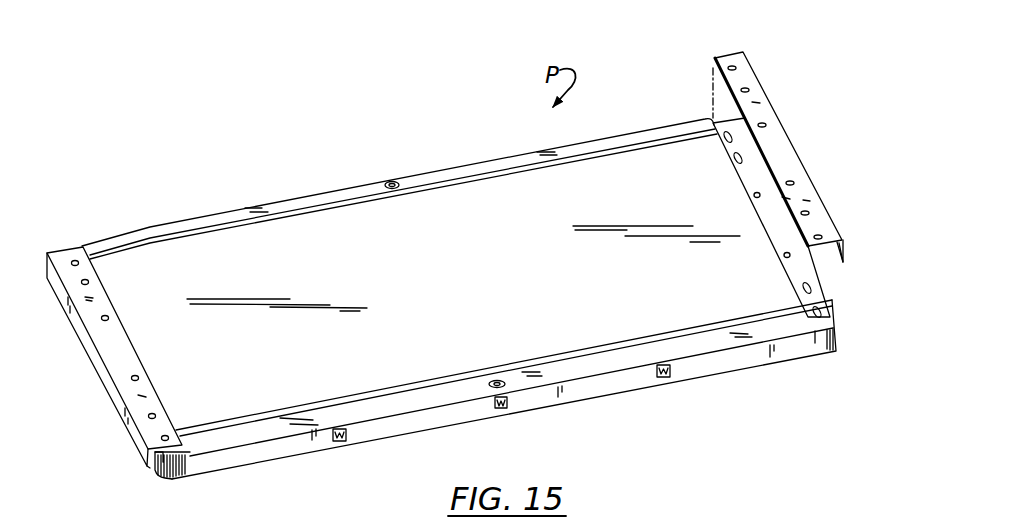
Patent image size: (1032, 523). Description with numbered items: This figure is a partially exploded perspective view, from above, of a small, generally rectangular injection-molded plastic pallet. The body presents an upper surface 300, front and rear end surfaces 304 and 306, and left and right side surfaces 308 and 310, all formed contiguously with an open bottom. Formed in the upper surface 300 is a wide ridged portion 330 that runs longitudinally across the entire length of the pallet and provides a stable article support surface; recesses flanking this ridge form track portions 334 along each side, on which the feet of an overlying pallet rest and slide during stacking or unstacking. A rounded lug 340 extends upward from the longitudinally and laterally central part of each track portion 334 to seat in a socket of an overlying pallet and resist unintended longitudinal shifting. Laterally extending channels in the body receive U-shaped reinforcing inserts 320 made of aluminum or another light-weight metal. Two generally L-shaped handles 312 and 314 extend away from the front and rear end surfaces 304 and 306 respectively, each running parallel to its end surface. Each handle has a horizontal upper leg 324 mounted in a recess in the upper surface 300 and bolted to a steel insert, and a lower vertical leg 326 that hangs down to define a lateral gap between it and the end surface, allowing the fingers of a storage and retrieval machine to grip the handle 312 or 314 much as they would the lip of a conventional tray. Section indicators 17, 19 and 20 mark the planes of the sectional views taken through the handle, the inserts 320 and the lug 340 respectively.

The upper surface 300 is at (490, 287).
The front end surface 304 is at (160, 468).
The rear end surface 306 is at (832, 309).
The left side surface 308 is at (727, 365).
The right side surface 310 is at (588, 138).
The handle 312 is at (113, 399).
The handle 314 is at (778, 82).
The U-shaped reinforcing inserts 320 is at (344, 441).
The upper leg 324 is at (82, 238).
The lower vertical leg 326 is at (140, 443).
The ridged portion 330 is at (656, 228).
The track portions 334 is at (205, 218).
The lugs 340 is at (394, 180).
The section line 17- 17 is at (67, 323).
The section line 19- 19 is at (415, 107).
The section line 20- 20 is at (382, 160).